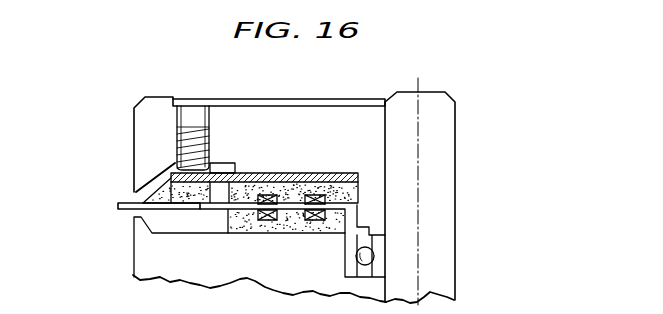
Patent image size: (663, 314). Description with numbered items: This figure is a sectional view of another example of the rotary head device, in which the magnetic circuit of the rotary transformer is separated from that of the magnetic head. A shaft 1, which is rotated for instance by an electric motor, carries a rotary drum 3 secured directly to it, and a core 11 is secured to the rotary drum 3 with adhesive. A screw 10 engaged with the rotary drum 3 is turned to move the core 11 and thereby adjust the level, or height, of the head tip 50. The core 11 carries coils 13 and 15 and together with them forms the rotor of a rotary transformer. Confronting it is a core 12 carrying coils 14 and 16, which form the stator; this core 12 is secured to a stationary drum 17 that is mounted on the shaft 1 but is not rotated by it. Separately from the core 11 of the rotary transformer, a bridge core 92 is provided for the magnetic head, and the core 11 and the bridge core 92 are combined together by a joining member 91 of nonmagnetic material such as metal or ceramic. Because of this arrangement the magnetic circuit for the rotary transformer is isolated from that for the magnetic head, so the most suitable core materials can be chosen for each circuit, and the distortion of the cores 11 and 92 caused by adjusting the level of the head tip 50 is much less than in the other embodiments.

The shaft 1 is at (448, 117).
The rotary drum 3 is at (142, 123).
The screw 10 is at (201, 97).
The core 11 is at (340, 190).
The core 12 is at (300, 230).
The coil 13 is at (266, 195).
The coil 14 is at (268, 222).
The coil 15 is at (320, 195).
The coil 16 is at (322, 222).
The stationary drum 17 is at (142, 257).
The head tip 50 is at (130, 205).
The joining member 91 is at (297, 177).
The bridge core 92 is at (147, 181).